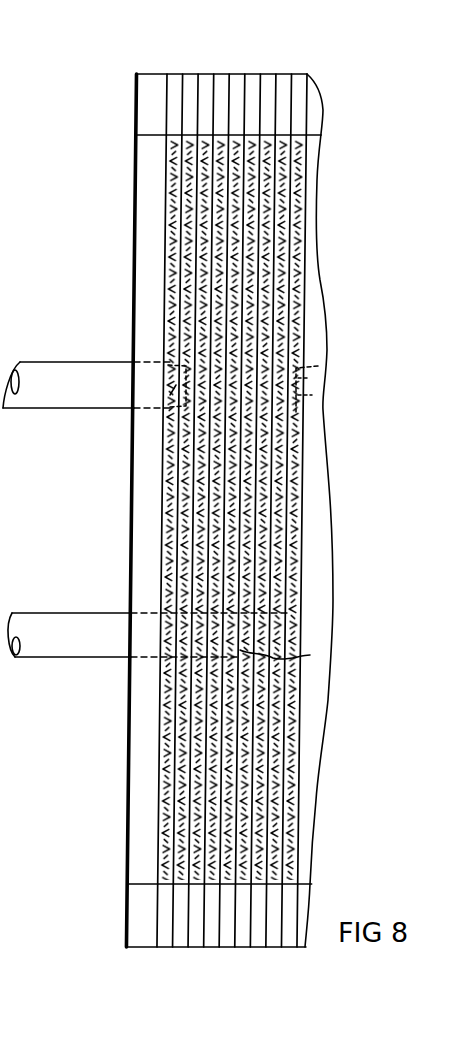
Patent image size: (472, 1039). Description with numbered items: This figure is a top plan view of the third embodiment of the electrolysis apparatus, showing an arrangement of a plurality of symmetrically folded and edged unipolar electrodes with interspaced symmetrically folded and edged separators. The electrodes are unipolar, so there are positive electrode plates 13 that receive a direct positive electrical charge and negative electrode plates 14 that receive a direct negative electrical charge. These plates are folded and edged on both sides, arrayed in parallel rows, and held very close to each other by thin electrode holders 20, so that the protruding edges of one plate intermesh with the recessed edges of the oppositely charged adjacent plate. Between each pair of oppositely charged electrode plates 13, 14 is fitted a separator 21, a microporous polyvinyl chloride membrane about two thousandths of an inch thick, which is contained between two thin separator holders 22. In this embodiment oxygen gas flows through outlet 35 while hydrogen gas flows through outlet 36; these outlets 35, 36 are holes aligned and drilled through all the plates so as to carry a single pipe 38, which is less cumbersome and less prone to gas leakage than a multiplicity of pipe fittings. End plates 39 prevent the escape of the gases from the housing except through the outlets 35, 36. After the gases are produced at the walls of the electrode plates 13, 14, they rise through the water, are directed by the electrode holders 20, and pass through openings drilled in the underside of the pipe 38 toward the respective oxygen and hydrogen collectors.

The positive electrode plate 13 is at (248, 860).
The negative electrode plate 14 is at (171, 196).
The electrode holder 20 is at (192, 88).
The separator 21 is at (203, 555).
The separator holder 22 is at (214, 940).
The oxygen gas outlet 35 is at (310, 655).
The hydrogen gas outlet 36 is at (167, 398).
The pipe 38 is at (78, 376).
The end plate 39 is at (146, 780).